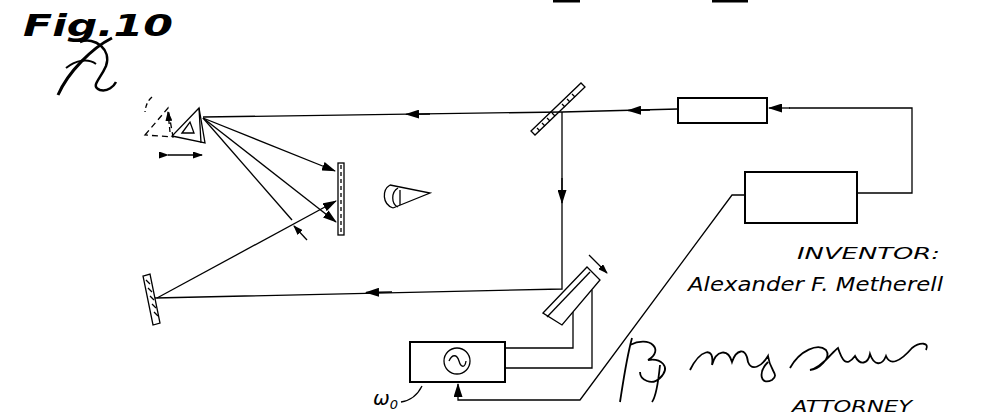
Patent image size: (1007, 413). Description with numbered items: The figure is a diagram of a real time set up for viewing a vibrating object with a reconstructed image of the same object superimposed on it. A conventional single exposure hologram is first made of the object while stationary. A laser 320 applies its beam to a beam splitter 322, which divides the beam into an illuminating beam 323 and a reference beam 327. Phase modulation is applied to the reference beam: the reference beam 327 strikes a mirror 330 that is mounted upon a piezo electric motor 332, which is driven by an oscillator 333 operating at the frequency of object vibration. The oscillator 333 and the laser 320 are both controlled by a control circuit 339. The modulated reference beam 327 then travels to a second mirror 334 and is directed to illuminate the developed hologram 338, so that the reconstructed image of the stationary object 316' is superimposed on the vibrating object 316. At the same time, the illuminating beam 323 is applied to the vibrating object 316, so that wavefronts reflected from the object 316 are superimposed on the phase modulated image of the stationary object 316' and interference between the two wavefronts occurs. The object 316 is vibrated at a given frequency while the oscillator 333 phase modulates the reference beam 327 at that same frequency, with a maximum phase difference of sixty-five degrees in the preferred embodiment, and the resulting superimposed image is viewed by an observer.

The vibrating object 316 is at (217, 108).
The reconstructed image of the stationary object 316' is at (163, 105).
The laser 320 is at (738, 97).
The beam splitter 322 is at (568, 85).
The illuminating beam 323 is at (440, 113).
The reference beam 327 is at (562, 170).
The mirror 330 is at (547, 311).
The piezo electric motor 332 is at (597, 283).
The oscillator 333 is at (446, 342).
The second mirror 334 is at (162, 323).
The developed hologram 338 is at (325, 160).
The control circuit 339 is at (793, 172).